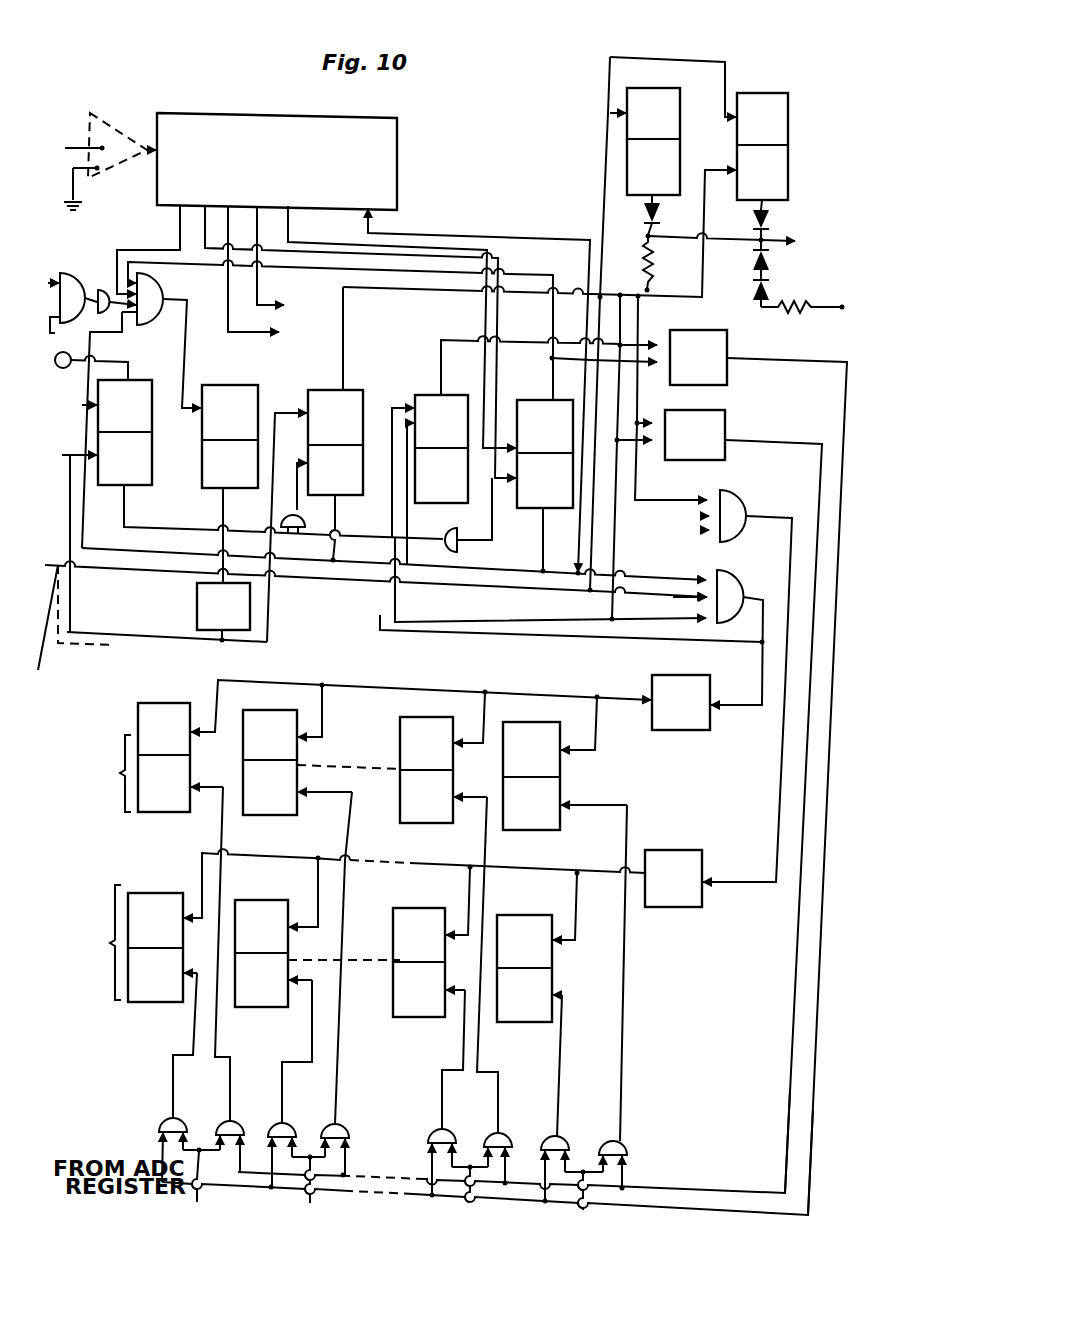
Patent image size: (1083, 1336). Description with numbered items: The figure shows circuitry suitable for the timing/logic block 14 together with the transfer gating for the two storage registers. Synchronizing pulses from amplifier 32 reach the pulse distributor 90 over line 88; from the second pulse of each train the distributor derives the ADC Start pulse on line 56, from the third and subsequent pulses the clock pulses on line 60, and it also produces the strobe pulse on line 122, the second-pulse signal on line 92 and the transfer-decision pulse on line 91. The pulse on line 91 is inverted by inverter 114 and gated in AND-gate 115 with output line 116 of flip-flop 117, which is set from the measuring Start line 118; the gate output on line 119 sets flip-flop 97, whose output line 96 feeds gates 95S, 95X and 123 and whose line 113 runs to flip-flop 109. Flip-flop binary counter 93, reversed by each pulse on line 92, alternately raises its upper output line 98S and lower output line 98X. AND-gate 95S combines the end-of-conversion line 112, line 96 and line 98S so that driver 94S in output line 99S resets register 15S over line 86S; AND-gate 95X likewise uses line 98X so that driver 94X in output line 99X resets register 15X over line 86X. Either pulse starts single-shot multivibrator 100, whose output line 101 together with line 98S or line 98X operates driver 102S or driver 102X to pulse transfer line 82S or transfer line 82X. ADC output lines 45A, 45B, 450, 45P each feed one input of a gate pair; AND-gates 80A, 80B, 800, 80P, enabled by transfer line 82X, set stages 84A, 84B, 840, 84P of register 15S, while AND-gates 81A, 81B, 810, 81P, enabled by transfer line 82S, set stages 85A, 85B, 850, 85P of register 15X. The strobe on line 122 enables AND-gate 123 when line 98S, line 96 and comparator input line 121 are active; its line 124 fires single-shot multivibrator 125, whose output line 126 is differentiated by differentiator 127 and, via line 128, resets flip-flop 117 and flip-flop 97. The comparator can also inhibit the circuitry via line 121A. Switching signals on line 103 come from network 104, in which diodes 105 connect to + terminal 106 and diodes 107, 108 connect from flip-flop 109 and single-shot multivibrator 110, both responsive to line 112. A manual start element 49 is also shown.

The amplifier 32 is at (103, 122).
The line 88 is at (146, 156).
The pulse distributor 90 is at (337, 157).
The line 122 is at (143, 234).
The line 92 is at (387, 260).
The line 91 is at (306, 241).
The ADC clock line 60 is at (263, 287).
The ADC Start line 56 is at (246, 333).
The output line 96 is at (553, 240).
The line 113 is at (348, 318).
The end-of-conversion line 112 is at (606, 132).
The single-shot multivibrator 110 is at (678, 123).
The diode 108 is at (655, 214).
The flip-flop 109 is at (792, 120).
The diode 107 is at (752, 216).
The line 103 is at (773, 233).
The network 104 is at (738, 266).
The diodes 105 is at (769, 277).
The + terminal 106 is at (842, 305).
The driver 102S is at (729, 341).
The driver 102X is at (727, 421).
The output line 101 is at (622, 396).
The upper output line 98S is at (655, 500).
The lower output line 98X is at (542, 520).
The input line 121 is at (52, 284).
The line 121A is at (84, 332).
The AND-gate 123 is at (162, 290).
The line 124 is at (185, 357).
The manual start button 49 is at (90, 376).
The measuring Start line 118 is at (65, 448).
The flip-flop 117 is at (153, 405).
The output line 116 is at (125, 503).
The single-shot multivibrator 125 is at (259, 402).
The output line 126 is at (222, 511).
The flip-flop 97 is at (344, 400).
The output line 119 is at (292, 476).
The AND-gate 115 is at (305, 538).
The differentiator 127 is at (196, 606).
The line 128 is at (188, 641).
The timing/logic circuitry 14 is at (80, 650).
The single-shot multivibrator 100 is at (423, 394).
The flip-flop binary counter 93 is at (560, 400).
The inverter 114 is at (447, 531).
The output line 99X is at (475, 623).
The output line 99S is at (487, 644).
The AND-gate 95S is at (734, 501).
The AND-gate 95X is at (733, 588).
The driver 94X is at (708, 718).
The driver 94S is at (690, 858).
The line 86X is at (531, 696).
The line 86S is at (637, 873).
The 15x register 15X is at (103, 773).
The 15s register 15S is at (93, 942).
The stage 85A is at (180, 757).
The stage 85B is at (321, 750).
The stage 850 is at (443, 757).
The stage 85P is at (565, 763).
The stage 84A is at (164, 947).
The stage 84B is at (317, 932).
The stage 840 is at (431, 942).
The stage 84P is at (537, 947).
The AND-gate 80A is at (170, 1121).
The AND-gate 81A is at (233, 1122).
The AND-gate 80B is at (284, 1128).
The AND-gate 81B is at (336, 1130).
The AND-gate 800 is at (432, 1130).
The AND-gate 810 is at (500, 1138).
The AND-gate 80P is at (558, 1142).
The AND-gate 81P is at (621, 1147).
The ADC output line 45A is at (224, 1181).
The ADC output line 45B is at (335, 1187).
The ADC output line 450 is at (493, 1195).
The ADC output line 45P is at (585, 1209).
The transfer line 82X is at (793, 1097).
The transfer line 82S is at (810, 1181).